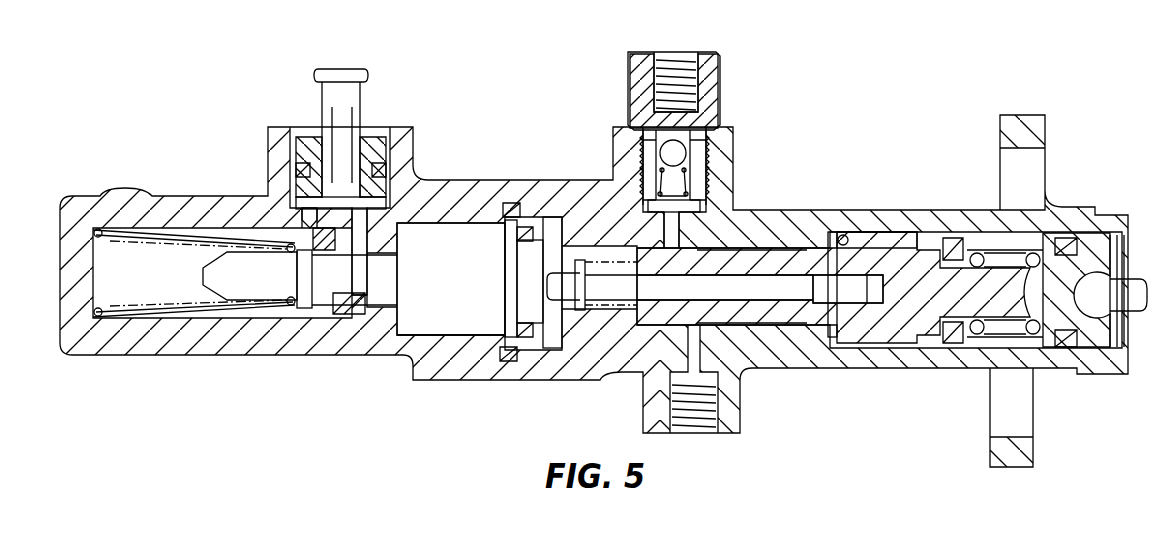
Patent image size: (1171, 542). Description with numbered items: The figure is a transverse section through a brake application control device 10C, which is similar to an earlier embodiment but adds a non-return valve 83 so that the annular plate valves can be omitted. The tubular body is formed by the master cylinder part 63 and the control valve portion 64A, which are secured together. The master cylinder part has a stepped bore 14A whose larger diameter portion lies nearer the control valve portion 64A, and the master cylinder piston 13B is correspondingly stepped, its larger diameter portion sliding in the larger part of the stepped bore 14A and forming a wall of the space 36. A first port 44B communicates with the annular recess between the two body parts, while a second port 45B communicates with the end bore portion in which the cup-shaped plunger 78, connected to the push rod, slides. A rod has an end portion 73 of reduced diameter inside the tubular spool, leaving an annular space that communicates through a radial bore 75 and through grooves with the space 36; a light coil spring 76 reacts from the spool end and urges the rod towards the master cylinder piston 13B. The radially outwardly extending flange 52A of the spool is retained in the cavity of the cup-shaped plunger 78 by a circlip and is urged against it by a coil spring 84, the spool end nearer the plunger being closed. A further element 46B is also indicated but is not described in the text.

The brake application control device 10C is at (214, 362).
The master cylinder part 63 is at (430, 222).
The master cylinder piston 13B is at (440, 276).
The stepped bore 14A is at (448, 340).
The non-return valve 83 is at (680, 156).
The passage 46B is at (672, 238).
The control valve portion 64A is at (798, 216).
The second port 45B is at (812, 198).
The radial bore 75 is at (835, 258).
The coil spring 84 is at (992, 248).
The cup-shaped plunger 78 is at (1085, 216).
The first port 44B is at (738, 376).
The end portion 73 is at (850, 292).
The radially outwardly extending flange 52A is at (955, 338).
The space 36 is at (580, 311).
The light coil spring 76 is at (605, 303).